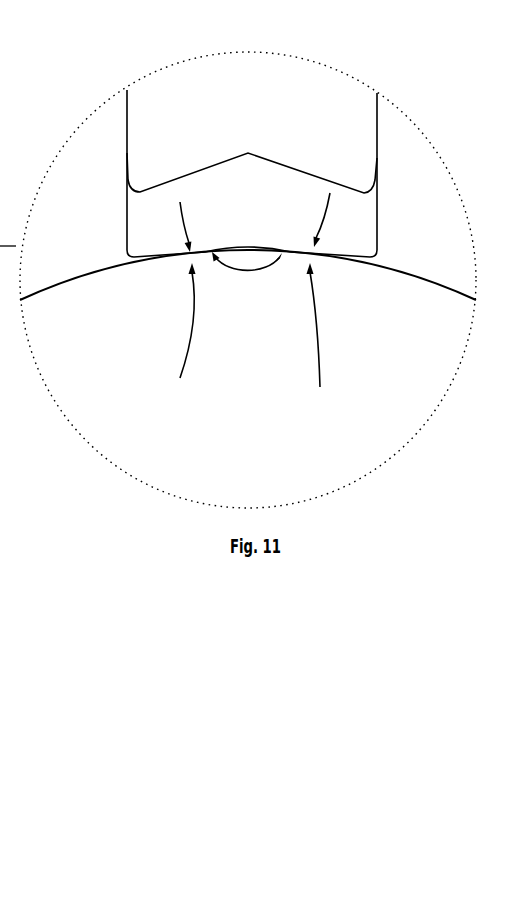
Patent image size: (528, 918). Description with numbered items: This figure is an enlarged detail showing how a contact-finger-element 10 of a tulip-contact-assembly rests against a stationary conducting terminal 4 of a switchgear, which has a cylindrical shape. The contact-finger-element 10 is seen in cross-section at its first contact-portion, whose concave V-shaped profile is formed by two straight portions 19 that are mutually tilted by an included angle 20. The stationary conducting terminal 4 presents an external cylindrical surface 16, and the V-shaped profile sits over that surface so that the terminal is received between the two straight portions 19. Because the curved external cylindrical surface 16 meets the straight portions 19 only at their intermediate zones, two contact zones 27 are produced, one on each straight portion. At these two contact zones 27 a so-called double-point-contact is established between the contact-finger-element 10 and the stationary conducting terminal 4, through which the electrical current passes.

The contact-finger-element 10 is at (347, 102).
The external cylindrical surface 16 is at (72, 281).
The stationary conducting terminal 4 is at (415, 278).
The straight portions 19 is at (168, 258).
The included angle 20 is at (243, 273).
The contact zones 27 is at (248, 337).